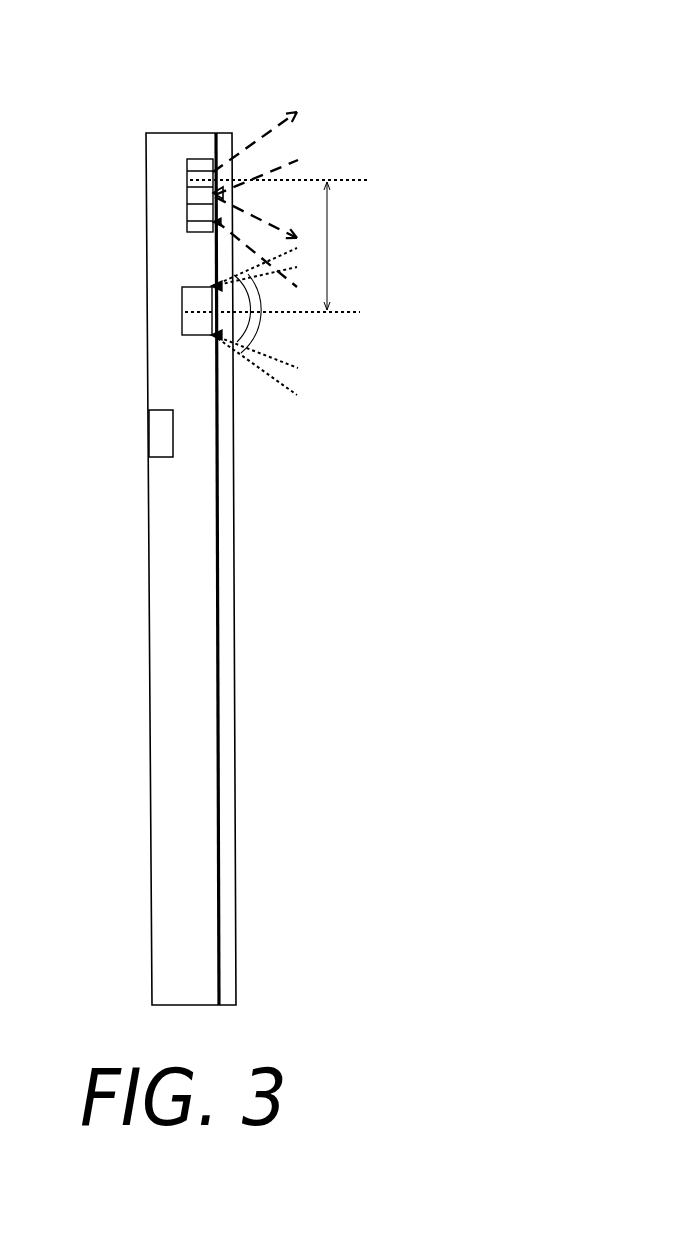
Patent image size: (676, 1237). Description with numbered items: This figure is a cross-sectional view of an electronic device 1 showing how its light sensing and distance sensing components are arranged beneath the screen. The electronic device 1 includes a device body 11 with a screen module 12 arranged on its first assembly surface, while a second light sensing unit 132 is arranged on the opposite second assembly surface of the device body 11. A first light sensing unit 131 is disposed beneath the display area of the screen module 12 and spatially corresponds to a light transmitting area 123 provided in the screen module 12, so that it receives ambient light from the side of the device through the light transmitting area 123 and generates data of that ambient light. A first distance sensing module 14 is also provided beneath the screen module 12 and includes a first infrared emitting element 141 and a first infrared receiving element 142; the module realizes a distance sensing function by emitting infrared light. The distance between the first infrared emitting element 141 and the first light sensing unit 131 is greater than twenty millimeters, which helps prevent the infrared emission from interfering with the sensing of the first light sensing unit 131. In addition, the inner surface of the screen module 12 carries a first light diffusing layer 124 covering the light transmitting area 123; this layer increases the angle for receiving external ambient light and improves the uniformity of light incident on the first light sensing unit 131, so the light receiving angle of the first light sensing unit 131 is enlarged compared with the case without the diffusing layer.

The electronic device 1 is at (331, 112).
The device body 11 is at (173, 627).
The screen module 12 is at (218, 463).
The light transmitting area 123 is at (213, 335).
The first light diffusing layer 124 is at (212, 284).
The first light sensing unit 131 is at (197, 310).
The second light sensing unit 132 is at (165, 427).
The first distance sensing module 14 is at (157, 58).
The first infrared emitting element 141 is at (198, 177).
The first infrared receiving element 142 is at (197, 213).